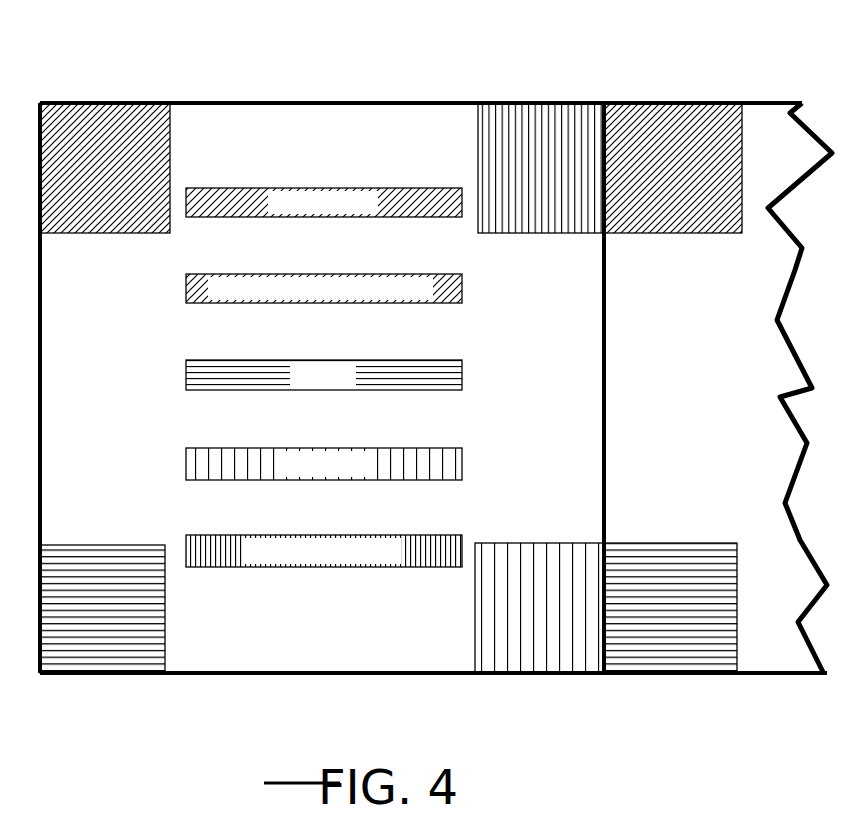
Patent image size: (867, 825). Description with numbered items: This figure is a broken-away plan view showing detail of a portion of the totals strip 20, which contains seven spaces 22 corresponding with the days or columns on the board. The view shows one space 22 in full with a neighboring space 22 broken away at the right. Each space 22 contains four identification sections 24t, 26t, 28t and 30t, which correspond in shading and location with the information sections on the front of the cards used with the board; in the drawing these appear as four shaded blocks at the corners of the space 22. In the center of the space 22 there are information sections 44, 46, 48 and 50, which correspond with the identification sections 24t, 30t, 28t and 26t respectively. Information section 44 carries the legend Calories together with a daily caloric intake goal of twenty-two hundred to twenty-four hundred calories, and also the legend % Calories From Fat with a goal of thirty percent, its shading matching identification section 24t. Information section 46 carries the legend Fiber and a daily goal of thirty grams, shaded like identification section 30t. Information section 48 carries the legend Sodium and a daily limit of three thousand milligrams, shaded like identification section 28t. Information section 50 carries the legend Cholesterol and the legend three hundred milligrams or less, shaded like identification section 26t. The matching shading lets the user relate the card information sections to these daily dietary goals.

The totals strip 20 is at (226, 97).
The space 22 is at (362, 101).
The identification section 24t is at (95, 101).
The identification section 26t is at (538, 101).
The identification section 28t is at (567, 675).
The identification section 30t is at (97, 677).
The information section 44 is at (187, 207).
The information section 46 is at (183, 370).
The information section 48 is at (183, 460).
The information section 50 is at (184, 537).